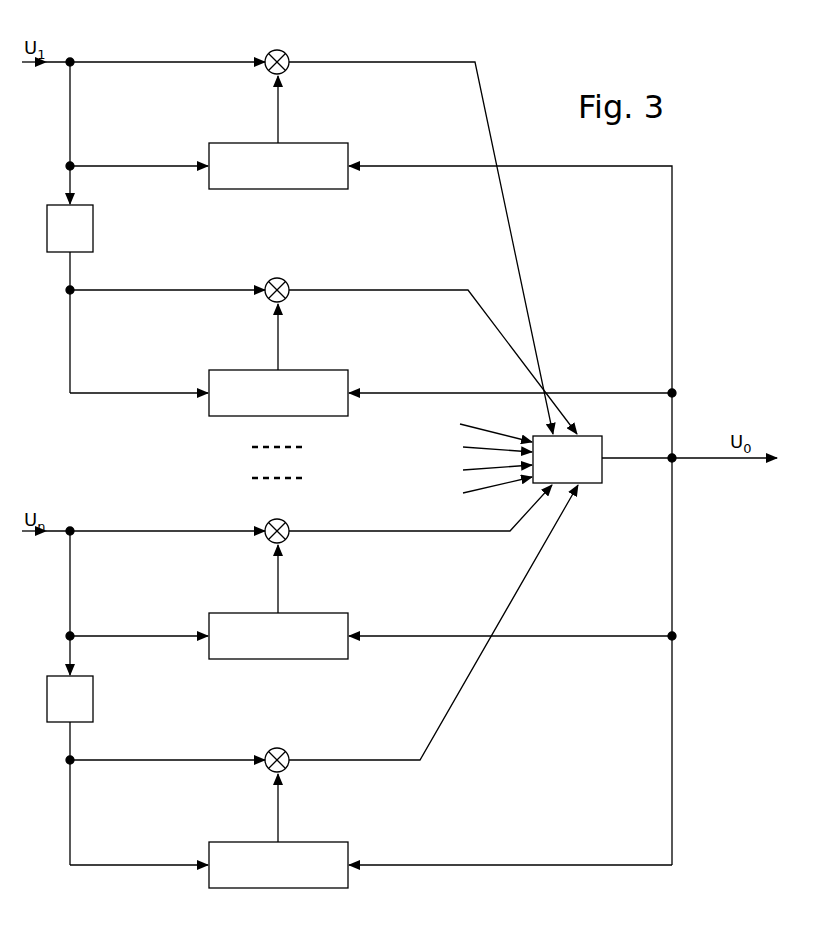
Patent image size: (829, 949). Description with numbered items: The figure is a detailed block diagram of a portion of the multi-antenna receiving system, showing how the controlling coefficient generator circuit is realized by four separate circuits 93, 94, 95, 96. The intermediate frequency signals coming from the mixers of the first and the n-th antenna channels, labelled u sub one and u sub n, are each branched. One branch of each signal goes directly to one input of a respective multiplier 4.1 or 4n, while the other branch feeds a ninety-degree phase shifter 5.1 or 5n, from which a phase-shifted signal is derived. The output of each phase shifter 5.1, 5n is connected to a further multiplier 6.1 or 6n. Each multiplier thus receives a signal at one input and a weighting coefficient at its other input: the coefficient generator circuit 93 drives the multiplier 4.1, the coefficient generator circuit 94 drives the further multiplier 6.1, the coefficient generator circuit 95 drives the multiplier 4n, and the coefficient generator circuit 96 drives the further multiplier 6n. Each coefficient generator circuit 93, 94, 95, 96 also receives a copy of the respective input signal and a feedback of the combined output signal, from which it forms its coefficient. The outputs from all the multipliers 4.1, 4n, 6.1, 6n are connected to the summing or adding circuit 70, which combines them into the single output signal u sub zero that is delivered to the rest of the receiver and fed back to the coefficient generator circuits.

The multiplier 4.1 is at (277, 51).
The further multiplier 6.1 is at (277, 278).
The multiplier 4n is at (276, 520).
The further multiplier 6n is at (276, 749).
The 90° phase shifter 5.1 is at (93, 228).
The 90° phase shifter 5n is at (90, 699).
The coefficient generator circuit 93 is at (278, 132).
The coefficient generator circuit 94 is at (278, 360).
The coefficient generator circuit 95 is at (278, 602).
The coefficient generator circuit 96 is at (278, 831).
The summing circuit 70 is at (582, 454).